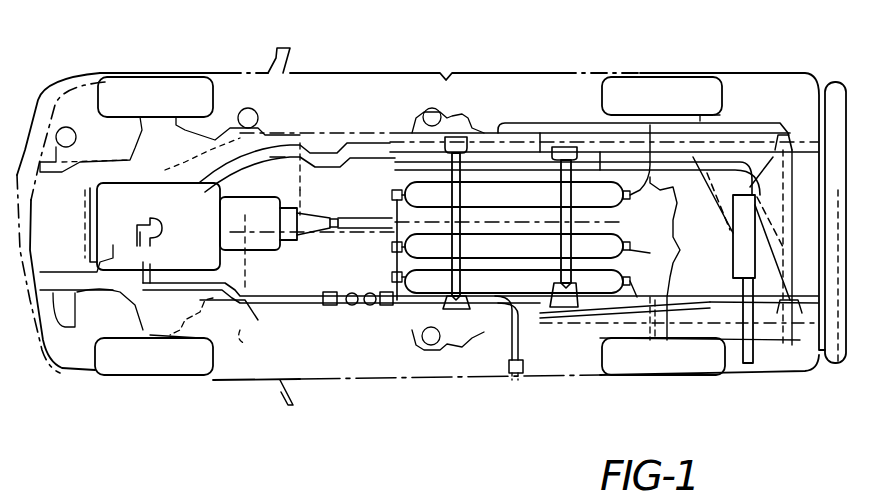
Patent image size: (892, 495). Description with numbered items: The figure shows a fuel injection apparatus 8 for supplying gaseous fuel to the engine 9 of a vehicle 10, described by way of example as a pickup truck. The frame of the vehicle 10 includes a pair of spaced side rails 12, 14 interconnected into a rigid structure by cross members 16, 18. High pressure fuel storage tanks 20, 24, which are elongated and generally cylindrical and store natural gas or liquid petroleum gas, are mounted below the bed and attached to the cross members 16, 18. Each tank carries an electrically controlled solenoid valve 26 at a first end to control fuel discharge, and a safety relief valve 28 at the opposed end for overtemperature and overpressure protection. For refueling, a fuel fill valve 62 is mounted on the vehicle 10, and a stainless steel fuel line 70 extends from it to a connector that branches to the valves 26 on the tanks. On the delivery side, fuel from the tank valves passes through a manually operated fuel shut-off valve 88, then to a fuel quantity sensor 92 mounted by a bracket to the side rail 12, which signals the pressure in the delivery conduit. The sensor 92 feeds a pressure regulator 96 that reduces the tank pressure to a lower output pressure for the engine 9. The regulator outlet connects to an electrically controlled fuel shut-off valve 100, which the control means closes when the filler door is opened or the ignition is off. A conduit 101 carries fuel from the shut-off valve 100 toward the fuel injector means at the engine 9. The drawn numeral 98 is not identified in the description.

The fuel injection apparatus 8 is at (371, 259).
The engine 9 is at (157, 181).
The vehicle 10 is at (211, 74).
The side rail 12 is at (293, 403).
The side rail 14 is at (362, 88).
The cross member 16 is at (457, 310).
The cross member 18 is at (568, 310).
The fuel storage tank 20 is at (490, 182).
The fuel storage tank 24 is at (530, 247).
The solenoid valve 26 is at (395, 270).
The safety relief valve 28 is at (628, 182).
The fuel fill valve 62 is at (519, 375).
The fuel line 70 is at (512, 345).
The fuel shut-off valve 88 is at (385, 307).
The fuel quantity sensor 92 is at (371, 306).
The pressure regulator 96 is at (350, 306).
The solenoid valve 98 is at (333, 306).
The fuel shut-off valve 100 is at (250, 330).
The conduit 101 is at (278, 296).